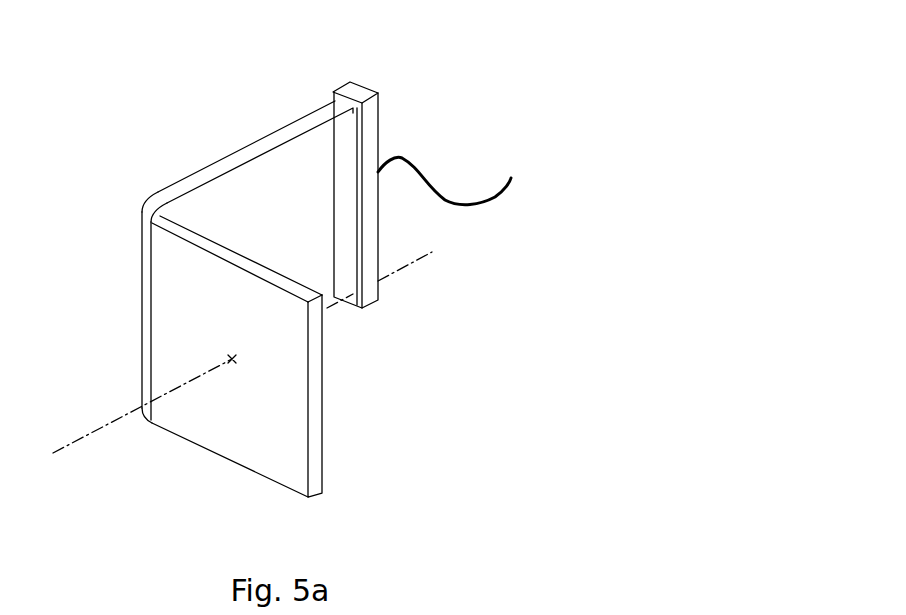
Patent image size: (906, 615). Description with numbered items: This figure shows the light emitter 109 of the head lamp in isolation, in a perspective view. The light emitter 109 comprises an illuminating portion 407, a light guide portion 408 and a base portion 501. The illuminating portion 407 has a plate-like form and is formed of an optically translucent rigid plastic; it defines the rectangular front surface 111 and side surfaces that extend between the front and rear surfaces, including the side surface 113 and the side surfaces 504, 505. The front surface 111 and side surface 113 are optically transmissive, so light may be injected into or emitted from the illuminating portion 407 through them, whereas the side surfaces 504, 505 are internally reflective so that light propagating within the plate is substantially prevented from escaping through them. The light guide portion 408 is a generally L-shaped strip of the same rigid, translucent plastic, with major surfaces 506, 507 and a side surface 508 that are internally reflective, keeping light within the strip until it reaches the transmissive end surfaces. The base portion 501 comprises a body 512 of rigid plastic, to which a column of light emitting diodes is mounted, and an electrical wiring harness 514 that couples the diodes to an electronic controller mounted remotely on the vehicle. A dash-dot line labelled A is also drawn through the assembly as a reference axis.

The light emitter 109 is at (530, 43).
The light guide portion 408 is at (166, 119).
The side surface 508 is at (243, 160).
The major surface 506 is at (223, 221).
The major surface 507 is at (170, 161).
The side surface 504 is at (246, 268).
The front surface 111 is at (236, 411).
The side surface 113 is at (317, 452).
The side surface 505 is at (219, 468).
The illuminating portion 407 is at (236, 508).
The body 512 is at (372, 263).
The electrical wiring harness 514 is at (497, 200).
The base portion 501 is at (420, 246).
The axis A is at (75, 443).